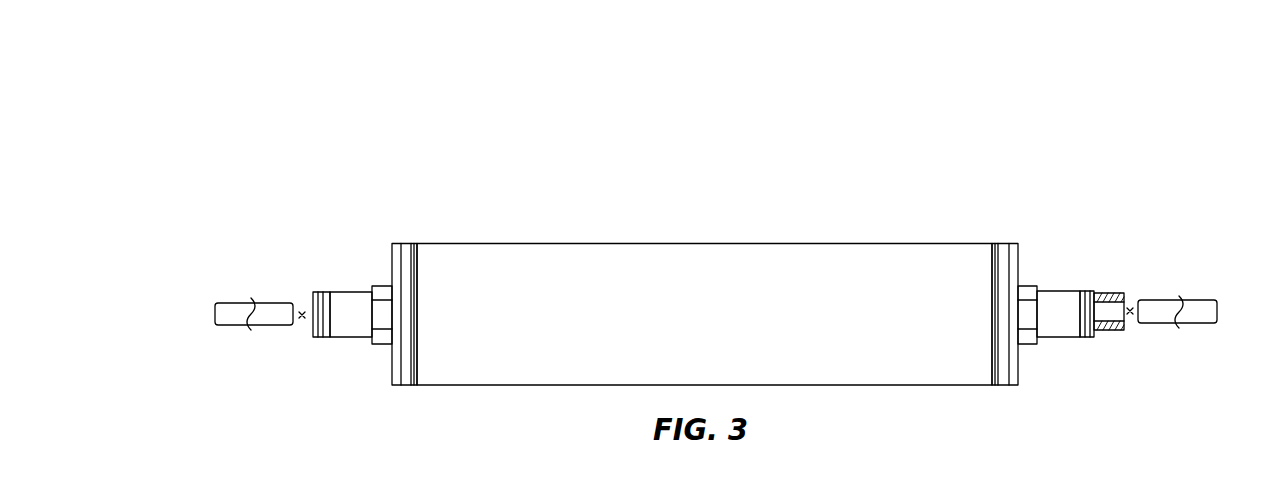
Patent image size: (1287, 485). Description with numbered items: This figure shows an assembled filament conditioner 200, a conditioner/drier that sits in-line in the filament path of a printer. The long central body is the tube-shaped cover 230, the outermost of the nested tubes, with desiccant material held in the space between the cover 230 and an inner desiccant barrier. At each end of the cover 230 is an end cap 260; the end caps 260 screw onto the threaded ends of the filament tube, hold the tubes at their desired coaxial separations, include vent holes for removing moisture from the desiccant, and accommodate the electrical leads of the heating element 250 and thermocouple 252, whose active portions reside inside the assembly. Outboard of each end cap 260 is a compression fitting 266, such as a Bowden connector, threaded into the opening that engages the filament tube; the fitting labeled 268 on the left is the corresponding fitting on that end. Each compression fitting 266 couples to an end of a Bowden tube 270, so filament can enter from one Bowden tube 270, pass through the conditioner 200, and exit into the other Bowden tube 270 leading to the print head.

The filament conditioner 200 is at (687, 83).
The tube-shaped cover 230 is at (576, 243).
The end caps 260 is at (403, 247).
The left shaft 268 is at (348, 290).
The compression fitting 266 is at (1065, 288).
The heating element 250 is at (1144, 283).
The thermocouple 252 is at (1098, 331).
The Bowden tube 270 is at (242, 302).